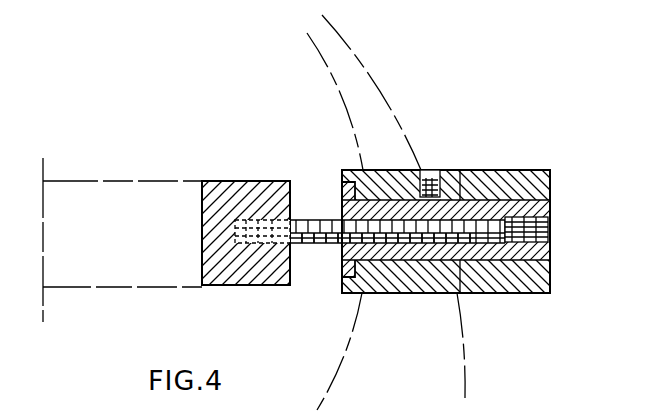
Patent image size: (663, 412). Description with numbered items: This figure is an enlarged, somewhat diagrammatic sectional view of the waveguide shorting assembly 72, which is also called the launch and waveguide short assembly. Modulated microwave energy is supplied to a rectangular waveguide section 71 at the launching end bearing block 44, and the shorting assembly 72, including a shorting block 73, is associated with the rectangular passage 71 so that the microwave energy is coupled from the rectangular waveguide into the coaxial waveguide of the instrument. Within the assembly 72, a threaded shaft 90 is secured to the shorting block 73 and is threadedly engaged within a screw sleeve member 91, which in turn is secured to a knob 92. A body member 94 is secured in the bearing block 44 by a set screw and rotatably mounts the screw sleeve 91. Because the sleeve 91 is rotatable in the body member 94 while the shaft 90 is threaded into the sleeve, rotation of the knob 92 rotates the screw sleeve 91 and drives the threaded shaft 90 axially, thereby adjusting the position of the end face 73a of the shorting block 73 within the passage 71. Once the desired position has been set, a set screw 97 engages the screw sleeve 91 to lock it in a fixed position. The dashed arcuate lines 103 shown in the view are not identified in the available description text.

The rectangular waveguide section 71 is at (74, 181).
The shorting block 73 is at (231, 215).
The end face 73a is at (200, 210).
The threaded shaft 90 is at (303, 219).
The screw sleeve member 91 is at (382, 200).
The body member 94 is at (412, 172).
The set screw 97 is at (431, 200).
The waveguide shorting assembly 72 is at (480, 156).
The knob 92 is at (550, 182).
The arcuate surface 103 is at (328, 62).
The launching end bearing block 44 is at (380, 90).